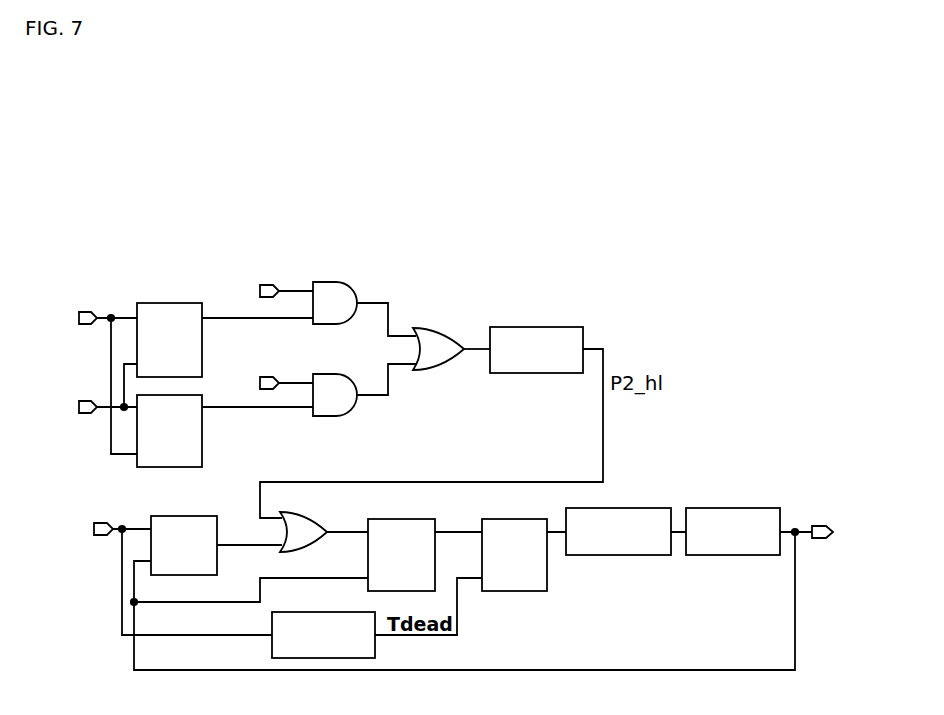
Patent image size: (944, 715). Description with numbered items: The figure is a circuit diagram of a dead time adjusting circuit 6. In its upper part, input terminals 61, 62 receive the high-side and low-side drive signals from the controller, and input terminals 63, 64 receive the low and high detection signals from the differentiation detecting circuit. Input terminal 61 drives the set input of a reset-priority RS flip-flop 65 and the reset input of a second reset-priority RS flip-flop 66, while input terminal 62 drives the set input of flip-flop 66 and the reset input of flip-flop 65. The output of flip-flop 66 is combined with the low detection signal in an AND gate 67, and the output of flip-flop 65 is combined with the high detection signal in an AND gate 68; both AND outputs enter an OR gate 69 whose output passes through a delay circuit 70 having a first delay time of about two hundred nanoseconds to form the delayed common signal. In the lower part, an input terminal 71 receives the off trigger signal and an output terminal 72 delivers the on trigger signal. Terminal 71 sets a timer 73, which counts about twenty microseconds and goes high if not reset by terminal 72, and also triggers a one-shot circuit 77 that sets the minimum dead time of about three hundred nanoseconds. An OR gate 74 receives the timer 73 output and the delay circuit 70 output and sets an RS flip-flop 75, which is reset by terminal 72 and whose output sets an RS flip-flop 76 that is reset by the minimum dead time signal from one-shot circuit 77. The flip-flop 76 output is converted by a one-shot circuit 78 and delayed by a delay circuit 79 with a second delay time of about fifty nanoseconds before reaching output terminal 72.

The dead time adjusting circuit 6 is at (748, 350).
The input terminal 61 is at (87, 311).
The input terminal 62 is at (87, 400).
The input terminal 63 is at (268, 376).
The input terminal 64 is at (268, 284).
The reset-priority RS flip-flop 65 is at (165, 303).
The reset-priority RS flip-flop 66 is at (202, 437).
The AND gate 67 is at (333, 374).
The AND gate 68 is at (333, 282).
The OR gate 69 is at (430, 327).
The delay circuit 70 is at (533, 327).
The input terminal 71 is at (104, 522).
The output terminal 72 is at (822, 540).
The timer 73 is at (183, 516).
The OR gate 74 is at (310, 512).
The reset-priority RS flip-flop 75 is at (405, 519).
The reset-priority RS flip-flop 76 is at (515, 519).
The one-shot circuit 77 is at (305, 612).
The one-shot circuit 78 is at (637, 508).
The delay circuit 79 is at (736, 508).